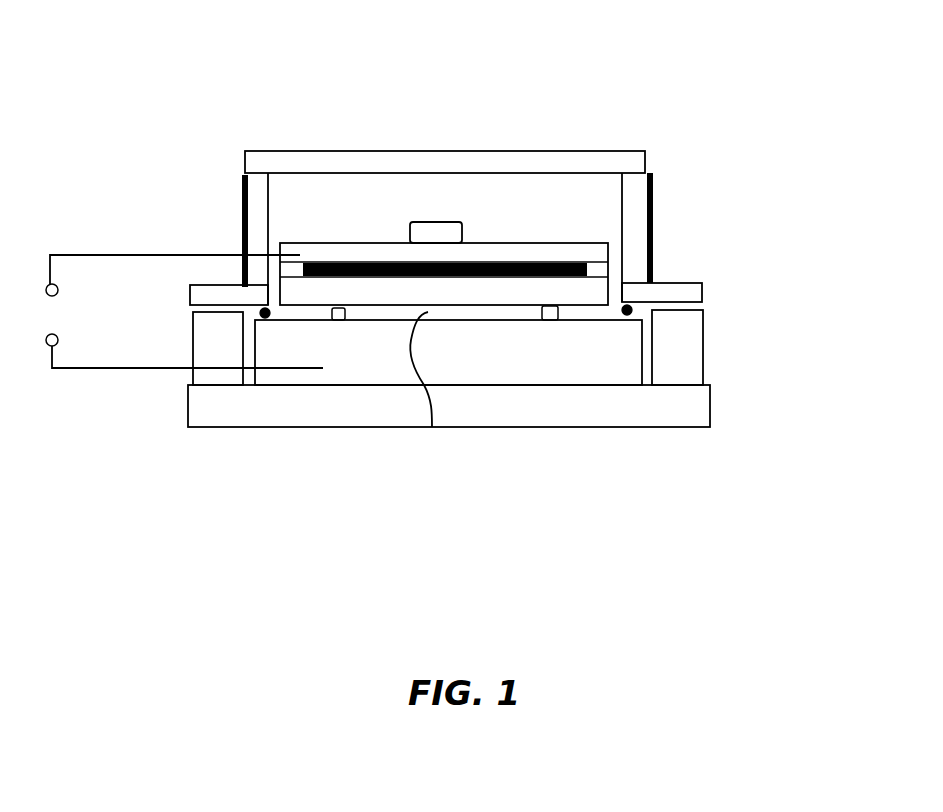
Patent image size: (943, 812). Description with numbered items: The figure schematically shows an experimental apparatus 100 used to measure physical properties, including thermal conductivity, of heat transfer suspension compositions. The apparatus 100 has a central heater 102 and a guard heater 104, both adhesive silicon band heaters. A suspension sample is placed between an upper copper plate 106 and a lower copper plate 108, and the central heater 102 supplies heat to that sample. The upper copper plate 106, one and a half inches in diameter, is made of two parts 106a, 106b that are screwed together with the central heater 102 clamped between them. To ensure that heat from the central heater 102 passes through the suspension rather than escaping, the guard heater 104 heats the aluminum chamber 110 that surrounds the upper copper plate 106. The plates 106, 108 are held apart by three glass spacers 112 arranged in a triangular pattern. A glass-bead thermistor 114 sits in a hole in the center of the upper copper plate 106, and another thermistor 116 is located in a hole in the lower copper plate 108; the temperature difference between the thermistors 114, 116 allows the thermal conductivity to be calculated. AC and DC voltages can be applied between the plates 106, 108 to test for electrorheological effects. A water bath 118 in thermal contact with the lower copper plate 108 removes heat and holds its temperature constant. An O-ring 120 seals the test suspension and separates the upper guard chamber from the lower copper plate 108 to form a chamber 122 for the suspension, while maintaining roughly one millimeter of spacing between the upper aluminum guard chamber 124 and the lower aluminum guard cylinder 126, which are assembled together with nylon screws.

The experimental apparatus 100 is at (95, 128).
The central heater 102 is at (320, 268).
The guard heater 104 is at (238, 221).
The upper copper plate 106 is at (345, 250).
The first part of upper copper plate 106a is at (608, 247).
The second part of upper copper plate 106b is at (610, 287).
The lower copper plate 108 is at (372, 367).
The aluminum chamber 110 is at (535, 192).
The glass spacers 112 is at (333, 322).
The glass-bead thermistor 114 is at (435, 255).
The thermistor 116 is at (583, 328).
The water bath 118 is at (468, 404).
The O-ring 120 is at (632, 310).
The chamber 122 is at (432, 427).
The upper aluminum guard chamber 124 is at (245, 176).
The lower aluminum guard cylinder 126 is at (200, 376).